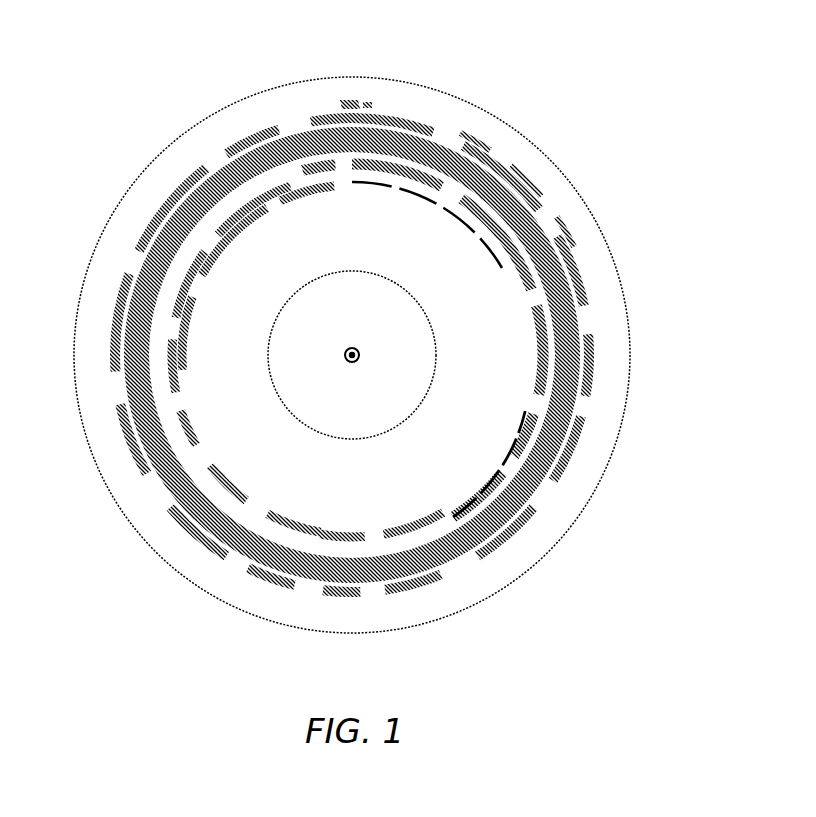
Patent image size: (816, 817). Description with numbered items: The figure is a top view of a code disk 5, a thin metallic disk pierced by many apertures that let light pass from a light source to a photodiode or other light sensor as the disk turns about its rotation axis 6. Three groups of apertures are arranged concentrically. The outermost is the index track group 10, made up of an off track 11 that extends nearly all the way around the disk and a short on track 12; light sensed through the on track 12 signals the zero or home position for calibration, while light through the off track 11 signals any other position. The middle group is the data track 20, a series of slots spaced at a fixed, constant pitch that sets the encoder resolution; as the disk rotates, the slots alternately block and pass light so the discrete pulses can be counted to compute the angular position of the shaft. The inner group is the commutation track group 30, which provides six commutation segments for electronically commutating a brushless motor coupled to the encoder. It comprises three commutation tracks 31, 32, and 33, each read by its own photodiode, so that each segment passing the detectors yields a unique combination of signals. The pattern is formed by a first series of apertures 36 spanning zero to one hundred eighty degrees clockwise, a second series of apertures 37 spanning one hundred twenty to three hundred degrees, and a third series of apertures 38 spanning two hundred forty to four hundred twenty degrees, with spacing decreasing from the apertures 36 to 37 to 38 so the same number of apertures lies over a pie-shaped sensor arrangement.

The code disk 5 is at (240, 64).
The rotation axis 6 is at (364, 354).
The index track group 10 is at (458, 138).
The off track 11 is at (492, 543).
The on track 12 is at (351, 98).
The data track 20 is at (506, 194).
The commutation track group 30 is at (198, 271).
The first commutation track 31 is at (541, 353).
The second commutation track 32 is at (263, 512).
The third commutation track 33 is at (243, 222).
The first series of apertures 36 is at (538, 313).
The second series of apertures 37 is at (220, 477).
The third series of apertures 38 is at (277, 203).